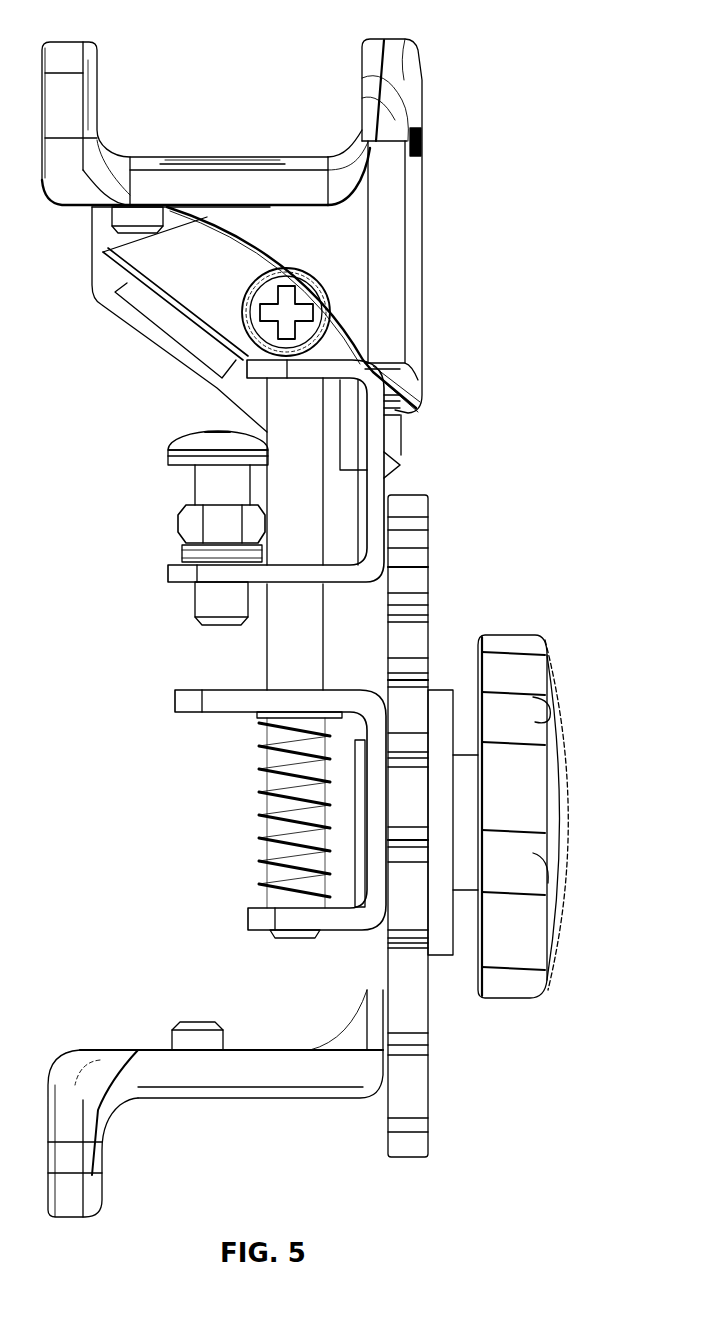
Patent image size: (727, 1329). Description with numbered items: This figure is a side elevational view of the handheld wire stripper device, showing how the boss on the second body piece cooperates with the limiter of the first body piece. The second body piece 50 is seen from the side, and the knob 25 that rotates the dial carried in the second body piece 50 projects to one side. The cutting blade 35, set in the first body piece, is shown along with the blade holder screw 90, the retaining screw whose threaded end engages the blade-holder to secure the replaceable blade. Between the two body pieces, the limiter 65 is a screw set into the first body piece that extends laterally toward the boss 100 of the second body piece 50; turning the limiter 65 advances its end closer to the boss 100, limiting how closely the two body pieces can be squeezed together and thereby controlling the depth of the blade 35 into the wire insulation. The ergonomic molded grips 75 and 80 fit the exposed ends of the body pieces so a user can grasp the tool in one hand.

The molded grip 75 is at (73, 102).
The retaining screw 90 is at (262, 322).
The cutting blade 35 is at (388, 437).
The limiter 65 is at (200, 603).
The boss 100 is at (232, 702).
The second body piece 50 is at (258, 918).
The knob 25 is at (512, 935).
The molded grip 80 is at (70, 1078).